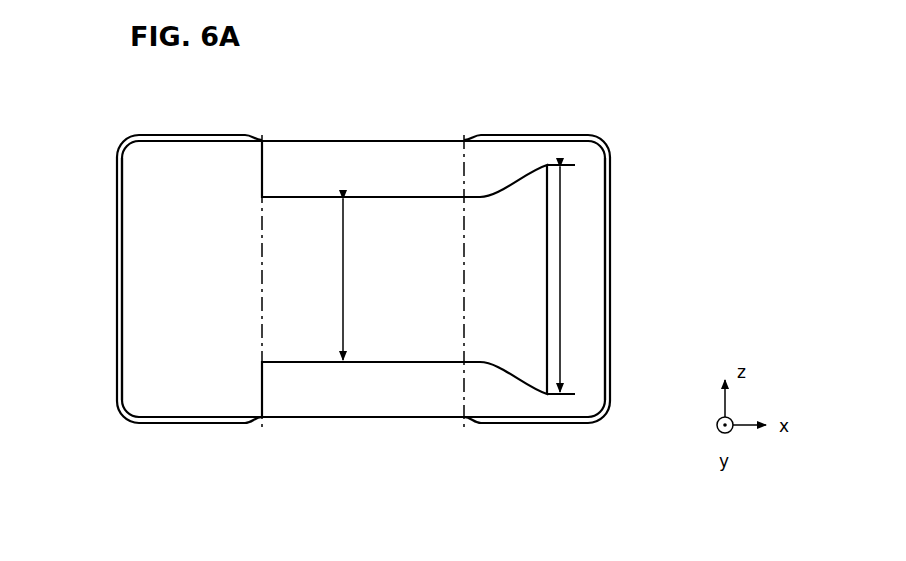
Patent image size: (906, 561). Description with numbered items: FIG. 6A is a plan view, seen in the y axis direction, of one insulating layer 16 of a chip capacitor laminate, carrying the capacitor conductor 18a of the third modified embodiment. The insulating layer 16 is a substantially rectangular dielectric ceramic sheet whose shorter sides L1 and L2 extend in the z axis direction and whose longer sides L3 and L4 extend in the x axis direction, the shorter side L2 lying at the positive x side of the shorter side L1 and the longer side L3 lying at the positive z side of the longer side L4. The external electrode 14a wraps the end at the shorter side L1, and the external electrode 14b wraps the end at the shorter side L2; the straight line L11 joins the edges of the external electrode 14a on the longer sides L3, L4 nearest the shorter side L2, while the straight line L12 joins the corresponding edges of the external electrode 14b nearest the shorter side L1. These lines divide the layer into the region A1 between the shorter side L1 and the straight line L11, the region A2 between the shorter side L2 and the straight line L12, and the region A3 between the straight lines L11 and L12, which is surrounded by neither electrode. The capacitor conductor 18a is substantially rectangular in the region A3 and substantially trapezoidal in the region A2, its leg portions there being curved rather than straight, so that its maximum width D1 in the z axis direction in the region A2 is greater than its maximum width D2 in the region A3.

The external electrode 14a is at (117, 296).
The external electrode 14b is at (610, 299).
The insulating layer 16 is at (588, 377).
The capacitor conductor 18a is at (400, 160).
The region A1 is at (159, 170).
The region A2 is at (578, 165).
The region A3 is at (357, 148).
The shorter side L1 is at (122, 367).
The shorter side L2 is at (605, 337).
The longer side L3 is at (325, 140).
The longer side L4 is at (341, 420).
The straight line L11 is at (262, 299).
The straight line L12 is at (464, 306).
The width of the capacitor conductor D1 is at (580, 279).
The width of the capacitor conductor D2 is at (363, 279).